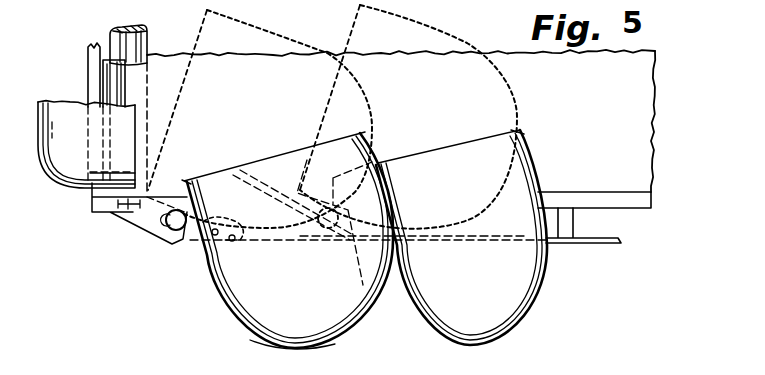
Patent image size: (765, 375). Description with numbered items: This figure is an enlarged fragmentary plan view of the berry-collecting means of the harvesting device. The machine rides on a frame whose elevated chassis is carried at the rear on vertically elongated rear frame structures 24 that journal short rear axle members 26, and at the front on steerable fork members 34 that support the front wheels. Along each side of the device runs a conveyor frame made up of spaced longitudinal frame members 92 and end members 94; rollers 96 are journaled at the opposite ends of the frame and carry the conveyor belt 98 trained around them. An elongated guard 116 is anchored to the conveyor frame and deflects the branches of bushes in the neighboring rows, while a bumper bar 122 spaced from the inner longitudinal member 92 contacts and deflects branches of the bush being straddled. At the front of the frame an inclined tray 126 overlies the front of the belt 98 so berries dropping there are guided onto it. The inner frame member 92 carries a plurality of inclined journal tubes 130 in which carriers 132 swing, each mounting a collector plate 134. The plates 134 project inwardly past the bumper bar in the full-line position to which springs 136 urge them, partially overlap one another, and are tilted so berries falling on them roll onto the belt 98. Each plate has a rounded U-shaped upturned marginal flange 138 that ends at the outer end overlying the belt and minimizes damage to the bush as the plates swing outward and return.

The rear frame structure 24 is at (380, 142).
The rear axle member 26 is at (408, 114).
The fork member 34 is at (177, 97).
The longitudinal frame member 92 is at (645, 200).
The end member 94 is at (90, 75).
The roller 96 is at (125, 25).
The conveyor belt 98 is at (643, 105).
The guard 116 is at (277, 114).
The bumper bar 122 is at (598, 243).
The inclined tray 126 is at (70, 153).
The inclined journal tube 130 is at (150, 228).
The carrier 132 is at (185, 243).
The collector plate 134 is at (247, 298).
The spring 136 is at (282, 194).
The upturned marginal flange 138 is at (253, 333).